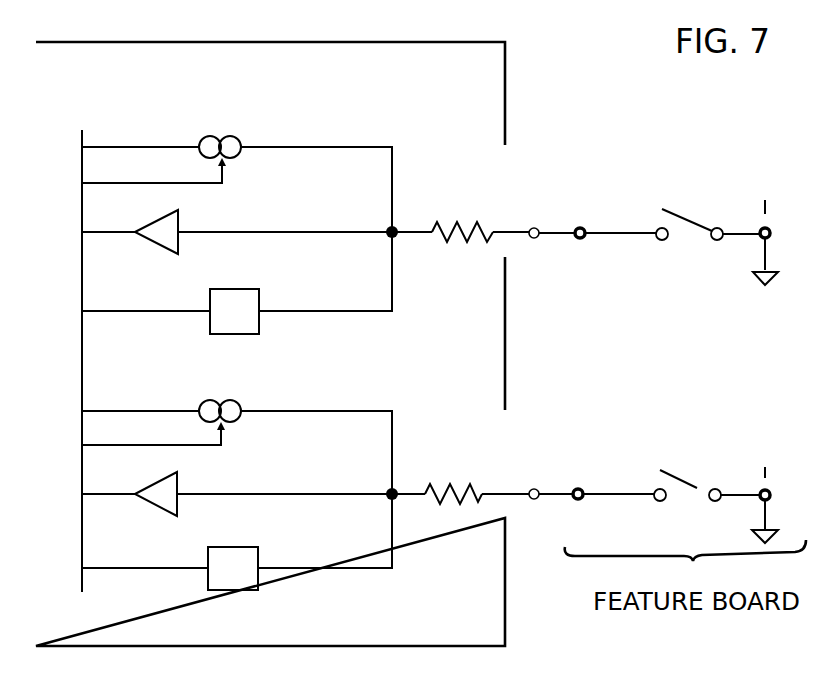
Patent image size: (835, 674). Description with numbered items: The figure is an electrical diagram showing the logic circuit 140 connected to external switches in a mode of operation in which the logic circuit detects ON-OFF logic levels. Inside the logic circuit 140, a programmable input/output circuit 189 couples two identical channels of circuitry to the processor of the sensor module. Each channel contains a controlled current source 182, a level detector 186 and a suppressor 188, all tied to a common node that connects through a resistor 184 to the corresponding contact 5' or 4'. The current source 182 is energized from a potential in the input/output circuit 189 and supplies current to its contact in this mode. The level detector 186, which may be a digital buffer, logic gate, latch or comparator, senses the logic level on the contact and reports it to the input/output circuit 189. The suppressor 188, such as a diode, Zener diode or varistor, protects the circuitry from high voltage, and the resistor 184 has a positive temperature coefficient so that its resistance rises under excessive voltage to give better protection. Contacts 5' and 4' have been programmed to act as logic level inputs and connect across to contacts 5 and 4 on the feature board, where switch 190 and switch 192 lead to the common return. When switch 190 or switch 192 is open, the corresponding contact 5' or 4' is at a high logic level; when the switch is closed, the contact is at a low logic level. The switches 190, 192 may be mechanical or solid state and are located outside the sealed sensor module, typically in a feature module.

The logic circuit 140 is at (317, 42).
The programmable input/output circuit 189 is at (77, 162).
The controlled current source 182 is at (240, 132).
The level detector 186 is at (178, 221).
The suppressor 188 is at (260, 299).
The resistor 184 is at (458, 222).
The switch 190 is at (703, 224).
The switch 192 is at (693, 470).
The contact 5 is at (583, 251).
The contact 5' is at (537, 249).
The contact 4 is at (580, 508).
The contact 4' is at (535, 507).